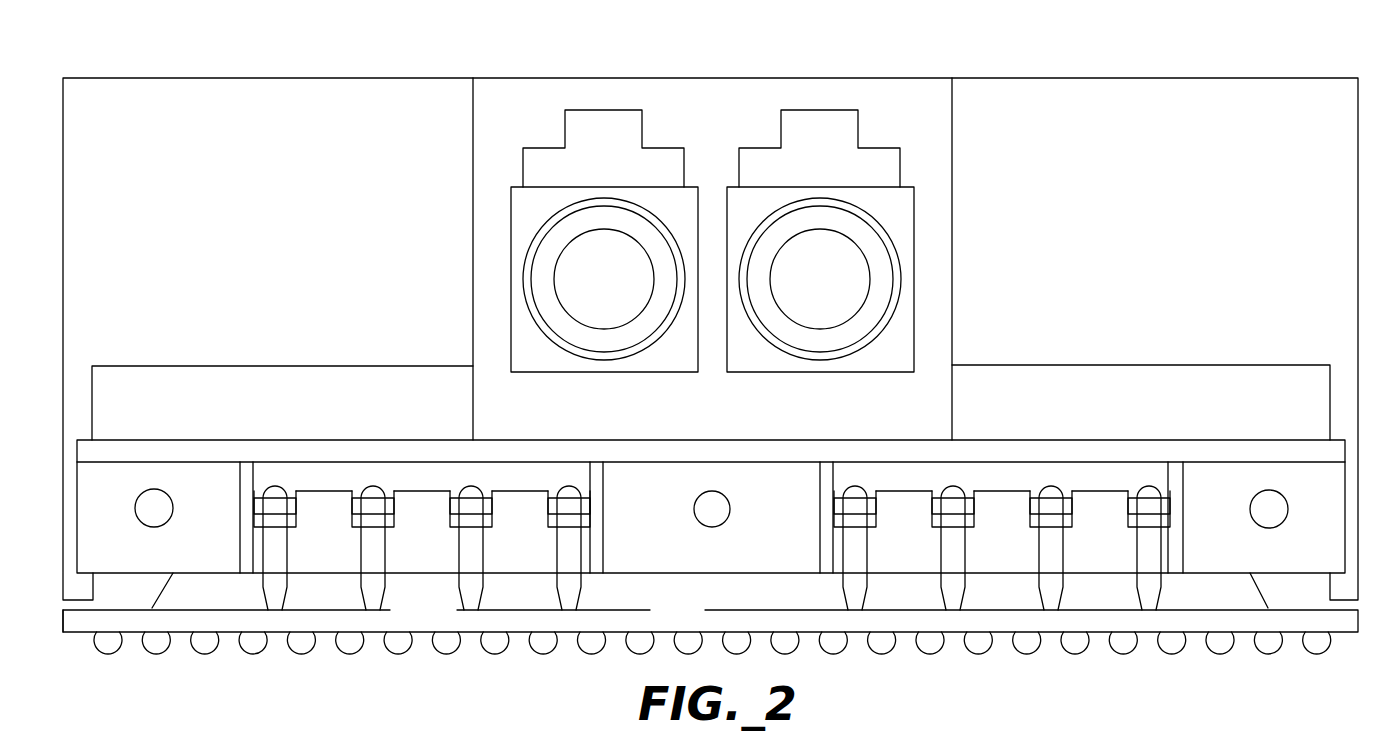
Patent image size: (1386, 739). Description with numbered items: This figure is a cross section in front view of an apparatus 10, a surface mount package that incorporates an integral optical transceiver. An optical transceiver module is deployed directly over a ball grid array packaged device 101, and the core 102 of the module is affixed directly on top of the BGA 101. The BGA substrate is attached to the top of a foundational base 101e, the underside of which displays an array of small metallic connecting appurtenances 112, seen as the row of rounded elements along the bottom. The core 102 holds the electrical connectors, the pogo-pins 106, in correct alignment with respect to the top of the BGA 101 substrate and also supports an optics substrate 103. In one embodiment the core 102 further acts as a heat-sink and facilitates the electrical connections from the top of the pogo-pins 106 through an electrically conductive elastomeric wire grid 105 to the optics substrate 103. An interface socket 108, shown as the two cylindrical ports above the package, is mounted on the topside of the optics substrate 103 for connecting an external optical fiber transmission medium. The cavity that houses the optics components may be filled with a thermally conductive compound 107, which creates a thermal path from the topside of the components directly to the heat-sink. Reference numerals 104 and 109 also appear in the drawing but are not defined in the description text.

The apparatus 10 is at (1345, 60).
The ball grid array (BGA) packaged device 101 is at (700, 620).
The foundational base 101e is at (452, 621).
The core 102 is at (675, 558).
The optics substrate 103 is at (1025, 452).
The contact pin 104 is at (272, 595).
The electrically conductive elastomeric wire grid 105 is at (343, 487).
The pogo-pins 106 is at (345, 548).
The thermally conductive compound 107 is at (283, 427).
The interface socket 108 is at (735, 123).
The shield cover 109 is at (160, 77).
The small metallic connecting appurtenances 112 is at (930, 650).